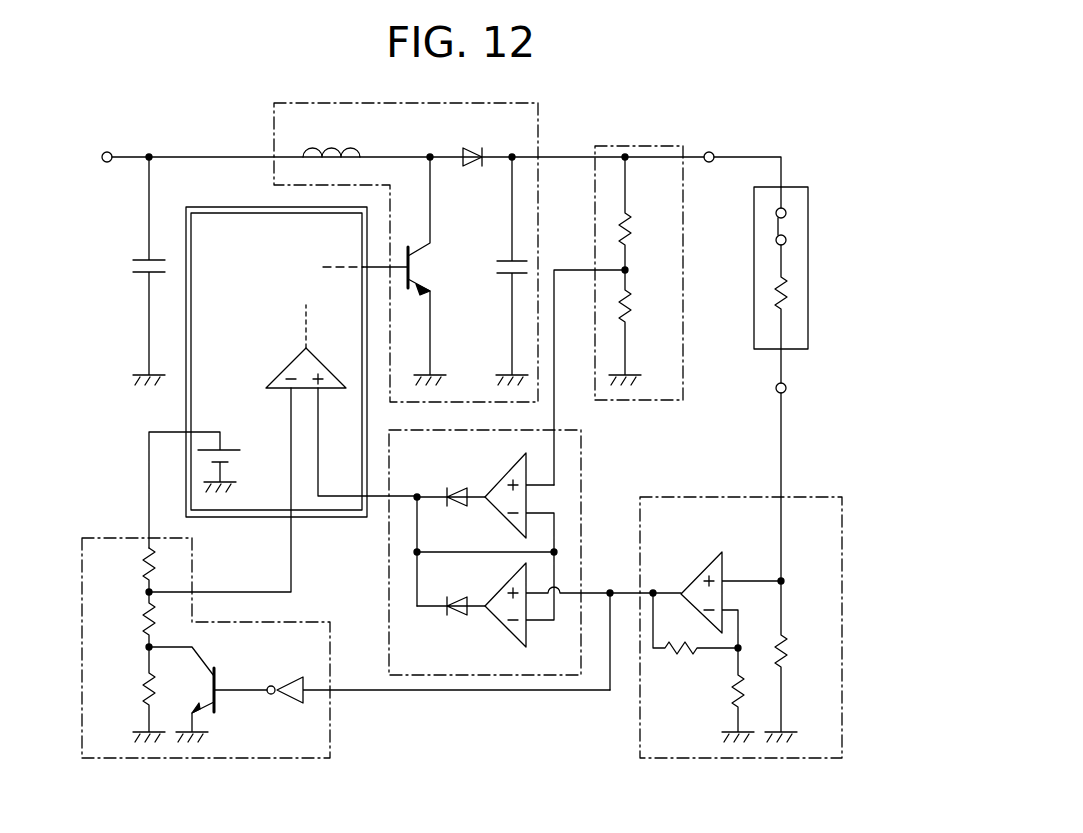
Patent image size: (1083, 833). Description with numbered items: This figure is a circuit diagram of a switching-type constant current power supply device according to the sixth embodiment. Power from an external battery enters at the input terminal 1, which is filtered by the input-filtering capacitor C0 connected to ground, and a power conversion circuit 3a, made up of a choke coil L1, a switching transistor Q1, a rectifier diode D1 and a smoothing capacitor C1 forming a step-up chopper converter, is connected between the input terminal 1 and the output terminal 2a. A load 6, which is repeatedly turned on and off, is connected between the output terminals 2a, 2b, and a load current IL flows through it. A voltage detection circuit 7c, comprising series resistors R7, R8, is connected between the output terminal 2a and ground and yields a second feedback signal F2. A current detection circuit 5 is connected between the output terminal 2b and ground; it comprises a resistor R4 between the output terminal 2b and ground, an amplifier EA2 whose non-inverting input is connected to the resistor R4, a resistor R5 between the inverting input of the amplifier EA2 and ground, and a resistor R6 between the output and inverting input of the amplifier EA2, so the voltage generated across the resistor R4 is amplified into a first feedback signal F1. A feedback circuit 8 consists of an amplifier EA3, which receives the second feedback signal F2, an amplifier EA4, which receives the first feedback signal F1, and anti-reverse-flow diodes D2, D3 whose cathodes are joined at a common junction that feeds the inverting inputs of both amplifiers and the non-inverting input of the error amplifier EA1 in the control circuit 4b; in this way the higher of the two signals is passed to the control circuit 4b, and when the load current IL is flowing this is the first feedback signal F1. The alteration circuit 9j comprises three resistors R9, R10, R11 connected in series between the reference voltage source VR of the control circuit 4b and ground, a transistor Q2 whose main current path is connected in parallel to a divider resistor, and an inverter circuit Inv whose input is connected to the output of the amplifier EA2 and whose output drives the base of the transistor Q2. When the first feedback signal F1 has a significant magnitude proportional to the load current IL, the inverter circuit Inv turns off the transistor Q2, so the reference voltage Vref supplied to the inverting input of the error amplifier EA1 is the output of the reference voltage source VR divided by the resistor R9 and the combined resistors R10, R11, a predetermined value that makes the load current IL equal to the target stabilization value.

The input terminal 1 is at (107, 152).
The input-filtering capacitor C0 is at (132, 268).
The power conversion circuit 3a is at (272, 135).
The choke coil L1 is at (333, 150).
The rectifier diode D1 is at (474, 149).
The switching transistor Q1 is at (436, 261).
The smoothing capacitor C1 is at (497, 274).
The voltage detection circuit 7c is at (626, 143).
The resistor R7 is at (631, 238).
The resistor R8 is at (631, 318).
The second feedback signal F2 is at (569, 297).
The output terminal 2a is at (709, 152).
The load current IL is at (778, 148).
The load 6 is at (812, 206).
The output terminal 2b is at (787, 388).
The control circuit 4b is at (320, 518).
The error amplifier EA1 is at (282, 366).
The reference voltage source VR is at (232, 456).
The reference voltage Vref is at (275, 535).
The alteration circuit 9j is at (334, 750).
The resistor R9 is at (144, 571).
The resistor R10 is at (146, 622).
The resistor R11 is at (146, 696).
The transistor Q2 is at (224, 670).
The inverter circuit Inv is at (289, 714).
The feedback circuit 8 is at (385, 598).
The anti-reverse-flow diode D2 is at (454, 508).
The anti-reverse-flow diode D3 is at (457, 596).
The amplifier EA3 is at (498, 482).
The amplifier EA4 is at (516, 637).
The first feedback signal F1 is at (632, 576).
The current detection circuit 5 is at (810, 485).
The amplifier EA2 is at (714, 554).
The resistor R6 is at (674, 656).
The resistor R5 is at (730, 693).
The resistor R4 is at (788, 655).